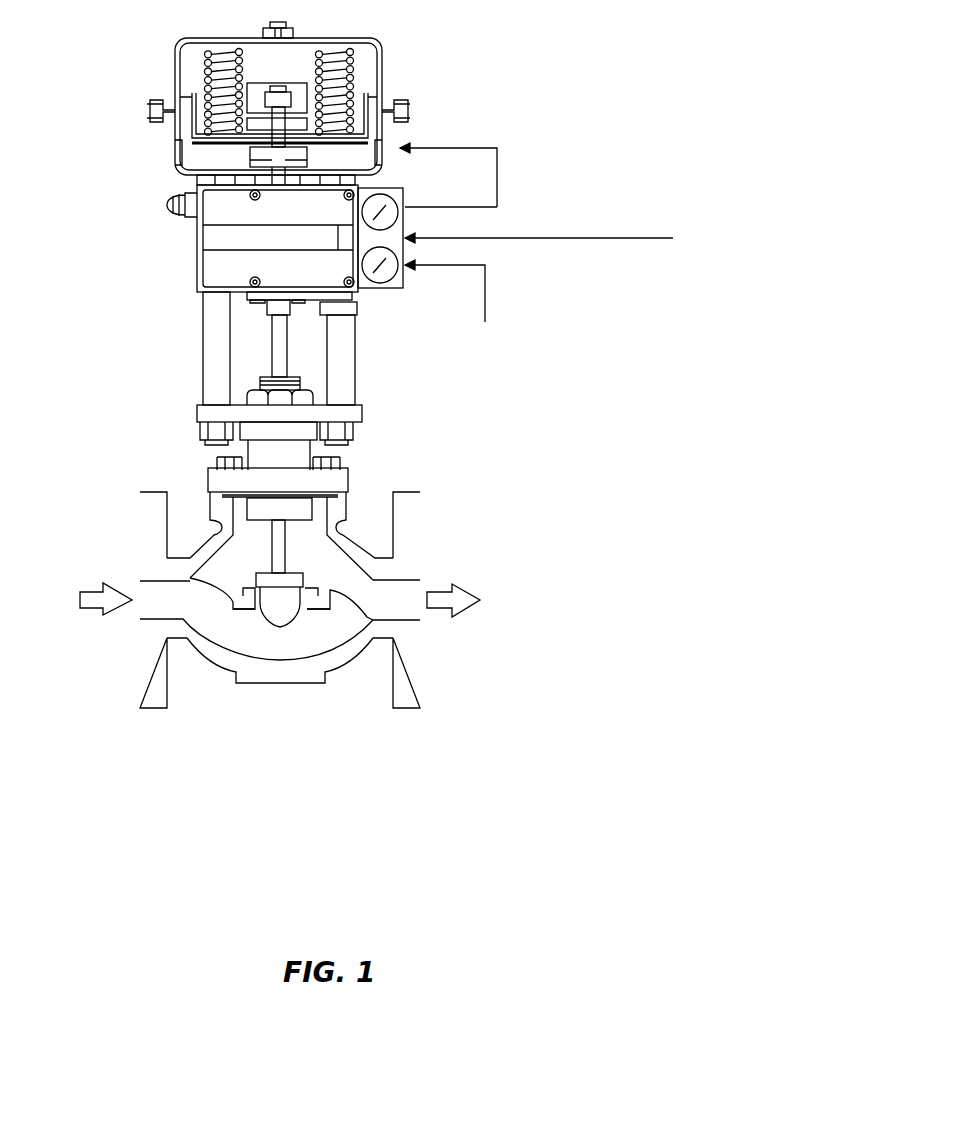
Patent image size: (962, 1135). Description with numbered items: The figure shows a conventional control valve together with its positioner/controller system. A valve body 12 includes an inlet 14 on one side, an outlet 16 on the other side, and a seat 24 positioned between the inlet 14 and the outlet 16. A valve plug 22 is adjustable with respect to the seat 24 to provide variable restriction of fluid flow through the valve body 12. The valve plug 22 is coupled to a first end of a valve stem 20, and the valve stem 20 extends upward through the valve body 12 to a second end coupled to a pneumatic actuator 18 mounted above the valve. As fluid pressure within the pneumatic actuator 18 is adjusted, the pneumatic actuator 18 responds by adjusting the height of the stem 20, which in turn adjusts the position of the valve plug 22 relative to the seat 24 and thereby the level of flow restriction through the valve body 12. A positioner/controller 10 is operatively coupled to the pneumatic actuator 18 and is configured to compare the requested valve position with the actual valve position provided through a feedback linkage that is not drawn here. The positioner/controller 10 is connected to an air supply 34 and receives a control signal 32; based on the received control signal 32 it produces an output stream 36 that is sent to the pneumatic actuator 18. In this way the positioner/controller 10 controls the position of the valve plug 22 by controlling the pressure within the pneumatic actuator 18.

The positioner/controller 10 is at (212, 267).
The valve body 12 is at (215, 655).
The inlet 14 is at (138, 578).
The outlet 16 is at (420, 577).
The pneumatic actuator 18 is at (383, 50).
The valve stem 20 is at (275, 345).
The valve plug 22 is at (292, 590).
The seat 24 is at (325, 607).
The control signal 32 is at (539, 226).
The air supply 34 is at (455, 305).
The output stream 36 is at (469, 175).